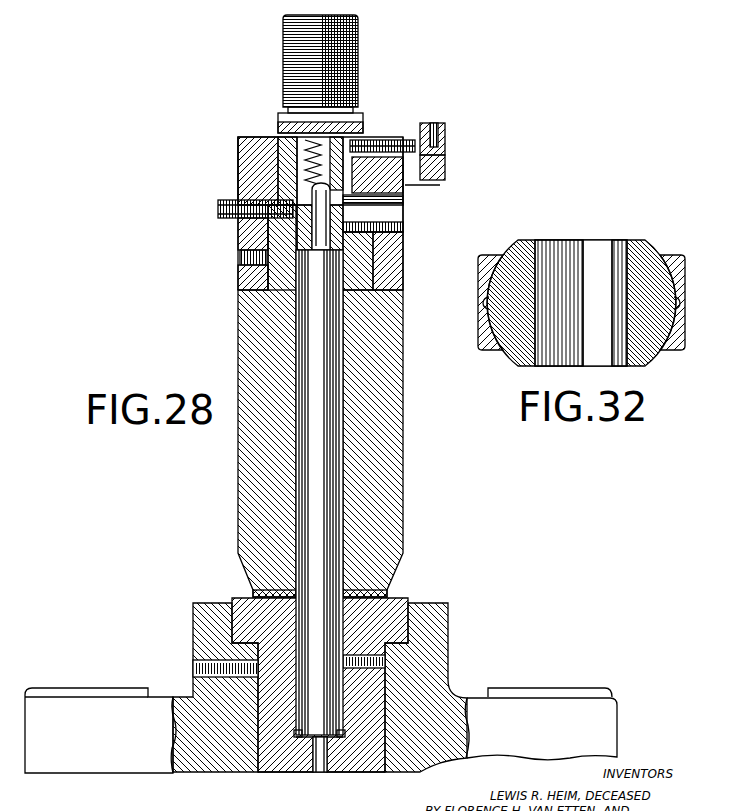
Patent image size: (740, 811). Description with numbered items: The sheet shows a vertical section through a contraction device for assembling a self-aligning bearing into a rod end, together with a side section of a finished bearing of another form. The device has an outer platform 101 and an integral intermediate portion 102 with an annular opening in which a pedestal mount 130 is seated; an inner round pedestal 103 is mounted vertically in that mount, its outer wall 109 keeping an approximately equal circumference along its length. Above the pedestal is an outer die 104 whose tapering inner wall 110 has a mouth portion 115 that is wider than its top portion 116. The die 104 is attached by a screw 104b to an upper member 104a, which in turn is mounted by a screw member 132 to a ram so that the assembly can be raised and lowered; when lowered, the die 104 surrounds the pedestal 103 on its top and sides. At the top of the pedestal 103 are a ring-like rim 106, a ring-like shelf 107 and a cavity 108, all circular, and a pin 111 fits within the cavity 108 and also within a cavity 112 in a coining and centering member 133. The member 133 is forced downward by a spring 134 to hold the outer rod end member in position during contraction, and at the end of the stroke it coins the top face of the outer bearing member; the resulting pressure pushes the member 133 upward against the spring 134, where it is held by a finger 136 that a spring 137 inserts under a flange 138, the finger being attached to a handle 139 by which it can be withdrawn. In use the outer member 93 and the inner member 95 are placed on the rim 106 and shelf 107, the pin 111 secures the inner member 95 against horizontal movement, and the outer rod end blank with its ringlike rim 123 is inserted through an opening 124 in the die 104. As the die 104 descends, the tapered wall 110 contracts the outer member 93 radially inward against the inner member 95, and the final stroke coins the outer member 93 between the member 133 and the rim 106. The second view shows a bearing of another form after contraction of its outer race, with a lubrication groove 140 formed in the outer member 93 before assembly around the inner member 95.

In FIG. 28, the outer platform 101 is at (617, 714).
In FIG. 28, the intermediate portion 102 is at (453, 669).
In FIG. 28, the inner round pedestal 103 is at (293, 742).
In FIG. 28, the outer die 104 is at (407, 504).
In FIG. 28, the upper member 104a is at (238, 142).
In FIG. 28, the screw 104b is at (240, 278).
In FIG. 28, the ring-like rim 106 is at (373, 227).
In FIG. 28, the ring-like shelf 107 is at (243, 241).
In FIG. 28, the cavity 108 is at (295, 237).
In FIG. 28, the outer wall 109 is at (365, 588).
In FIG. 28, the tapering inner wall 110 is at (295, 445).
In FIG. 28, the pin 111 is at (240, 252).
In FIG. 28, the cavity 112 is at (441, 185).
In FIG. 28, the mouth portion 115 is at (258, 589).
In FIG. 28, the top portion 116 is at (347, 262).
In FIG. 28, the outer ringlike rim 123 is at (405, 202).
In FIG. 28, the opening 124 is at (230, 200).
In FIG. 28, the pedestal mount 130 is at (374, 767).
In FIG. 28, the screw member 132 is at (357, 58).
In FIG. 28, the coining and centering member 133 is at (243, 163).
In FIG. 28, the spring 134 is at (357, 128).
In FIG. 28, the finger 136 is at (370, 143).
In FIG. 28, the spring 137 is at (420, 123).
In FIG. 28, the flange 138 is at (280, 132).
In FIG. 28, the handle 139 is at (447, 164).
In FIG. 32, the outer member 93 is at (683, 337).
In FIG. 32, the inner member 95 is at (643, 240).
In FIG. 32, the lubrication groove 140 is at (678, 300).